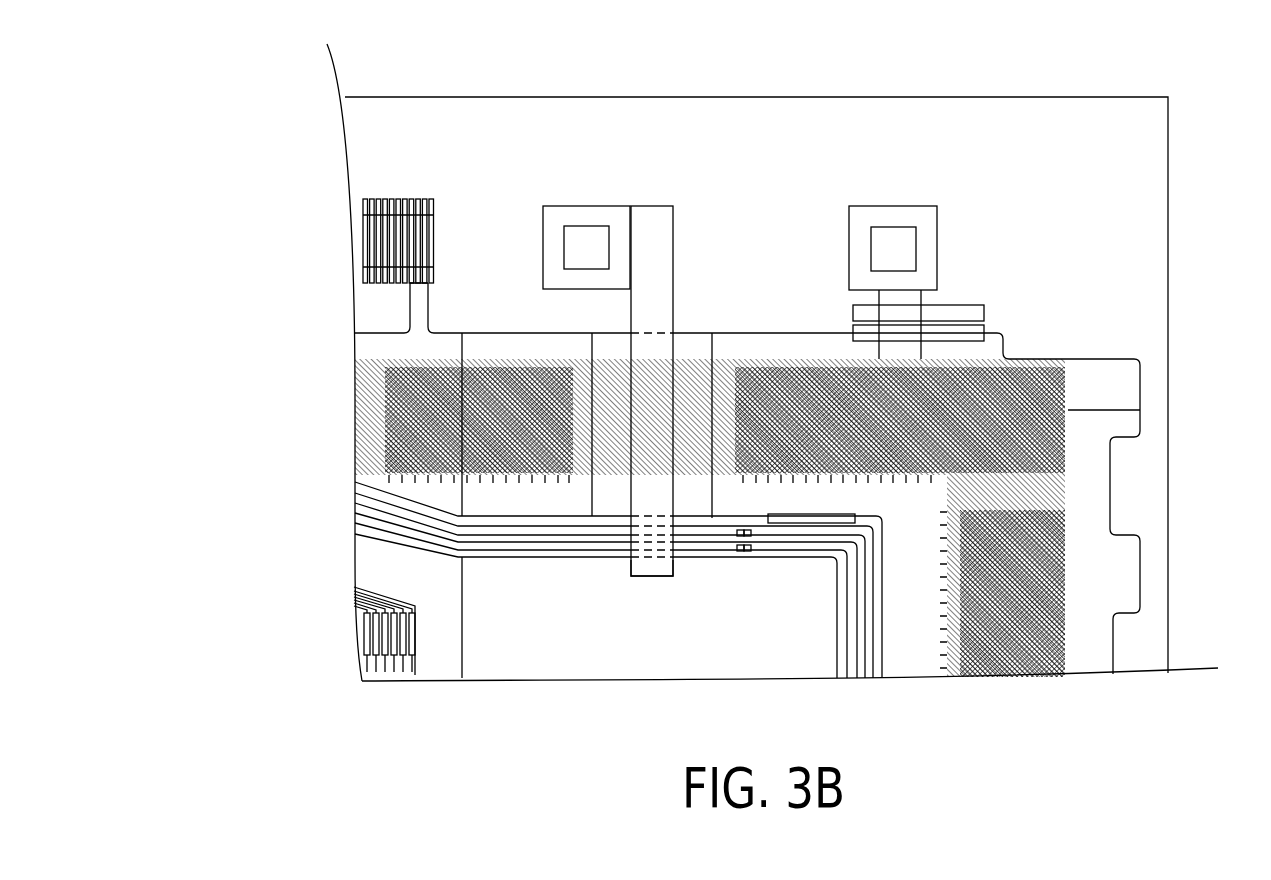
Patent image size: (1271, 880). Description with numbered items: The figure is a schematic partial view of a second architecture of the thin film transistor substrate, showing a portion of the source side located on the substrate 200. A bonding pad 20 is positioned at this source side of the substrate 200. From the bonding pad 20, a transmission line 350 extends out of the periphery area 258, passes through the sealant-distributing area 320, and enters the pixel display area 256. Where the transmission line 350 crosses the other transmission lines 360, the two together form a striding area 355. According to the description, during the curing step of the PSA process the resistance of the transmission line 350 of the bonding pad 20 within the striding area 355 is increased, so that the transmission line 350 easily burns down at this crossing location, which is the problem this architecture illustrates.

The bonding pad 20 is at (595, 212).
The substrate 200 is at (1042, 690).
The pixel display area 256 is at (523, 612).
The periphery area 258 is at (517, 242).
The sealant-distributing area 320 is at (573, 363).
The transmission line 350 is at (648, 237).
The striding area 355 is at (655, 547).
The other transmission lines 360 is at (597, 533).